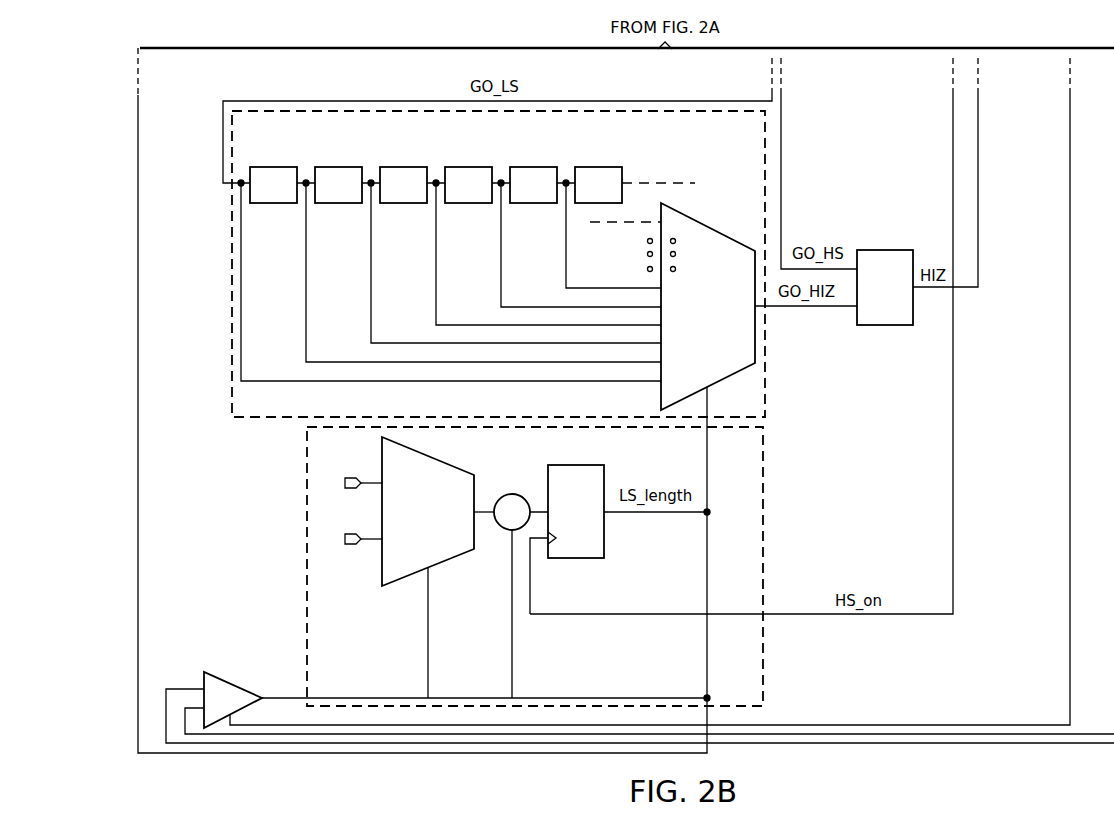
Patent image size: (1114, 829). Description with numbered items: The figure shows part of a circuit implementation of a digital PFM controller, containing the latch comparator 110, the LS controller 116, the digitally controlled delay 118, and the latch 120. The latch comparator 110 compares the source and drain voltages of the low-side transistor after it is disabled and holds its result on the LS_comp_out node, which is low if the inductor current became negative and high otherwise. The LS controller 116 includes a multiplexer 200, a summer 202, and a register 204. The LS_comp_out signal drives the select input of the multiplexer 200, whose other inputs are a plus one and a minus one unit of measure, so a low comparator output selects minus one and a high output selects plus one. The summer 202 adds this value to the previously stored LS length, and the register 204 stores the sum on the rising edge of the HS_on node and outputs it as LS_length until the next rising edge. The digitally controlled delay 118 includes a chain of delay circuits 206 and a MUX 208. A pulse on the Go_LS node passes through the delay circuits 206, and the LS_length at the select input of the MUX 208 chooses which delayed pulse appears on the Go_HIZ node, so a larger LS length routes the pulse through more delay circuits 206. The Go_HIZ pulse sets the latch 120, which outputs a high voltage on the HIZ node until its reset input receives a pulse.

The latch comparator 110 is at (226, 672).
The LS controller 116 is at (307, 522).
The digitally controlled delay 118 is at (232, 252).
The latch 120 is at (886, 250).
The multiplexer 200 is at (440, 568).
The summer 202 is at (509, 494).
The register 204 is at (577, 558).
The delay circuits 206 is at (600, 167).
The MUX 208 is at (703, 334).